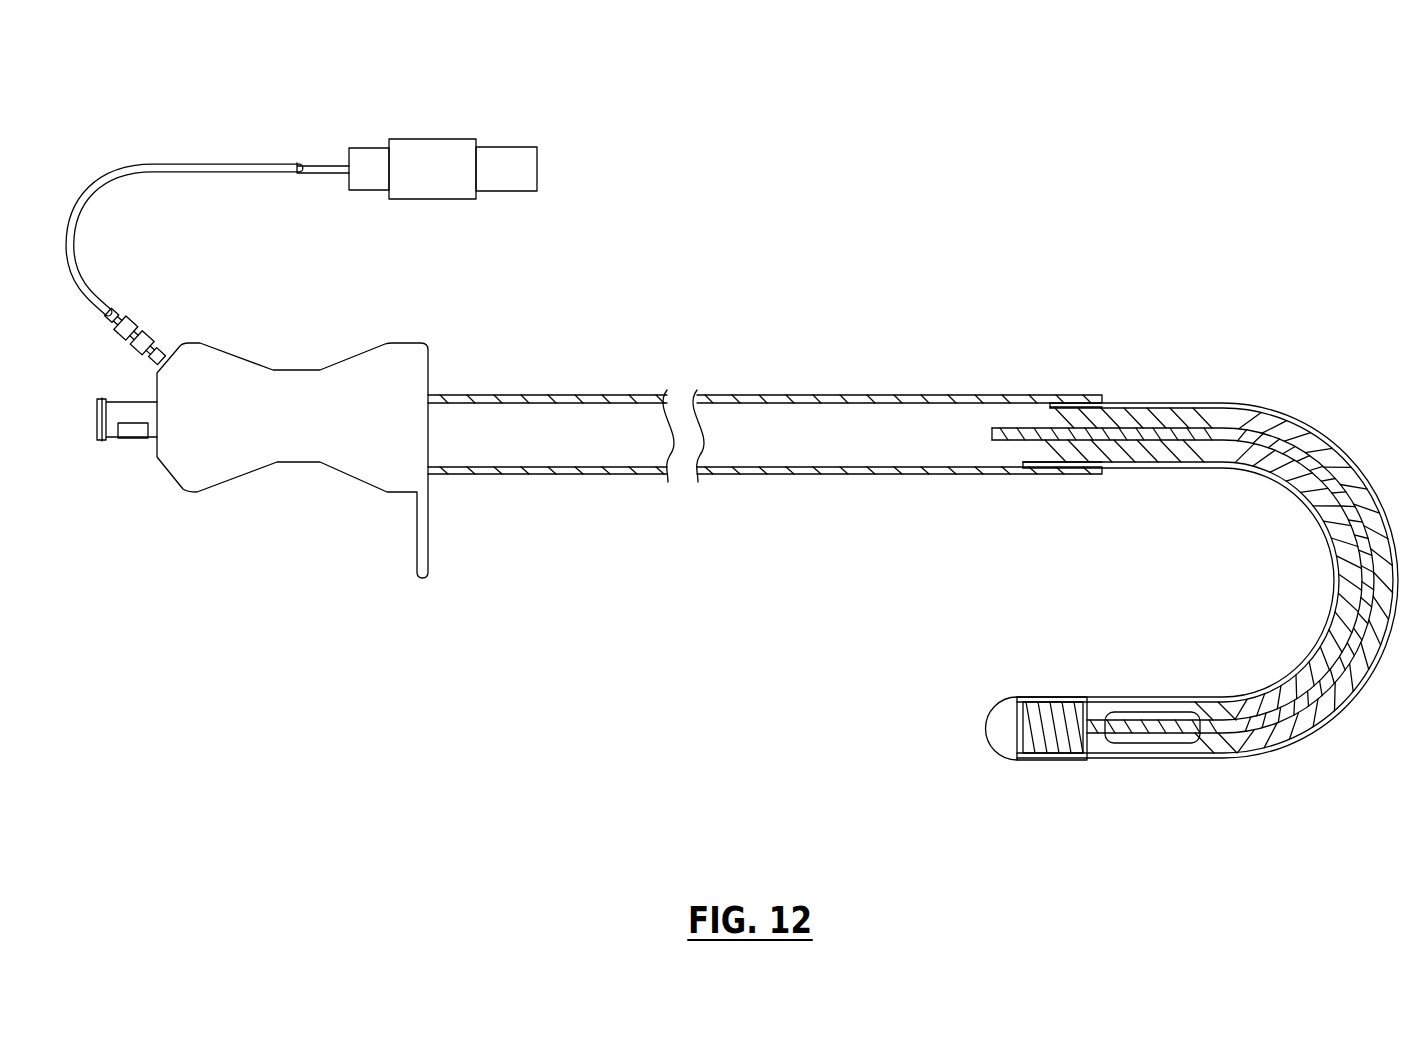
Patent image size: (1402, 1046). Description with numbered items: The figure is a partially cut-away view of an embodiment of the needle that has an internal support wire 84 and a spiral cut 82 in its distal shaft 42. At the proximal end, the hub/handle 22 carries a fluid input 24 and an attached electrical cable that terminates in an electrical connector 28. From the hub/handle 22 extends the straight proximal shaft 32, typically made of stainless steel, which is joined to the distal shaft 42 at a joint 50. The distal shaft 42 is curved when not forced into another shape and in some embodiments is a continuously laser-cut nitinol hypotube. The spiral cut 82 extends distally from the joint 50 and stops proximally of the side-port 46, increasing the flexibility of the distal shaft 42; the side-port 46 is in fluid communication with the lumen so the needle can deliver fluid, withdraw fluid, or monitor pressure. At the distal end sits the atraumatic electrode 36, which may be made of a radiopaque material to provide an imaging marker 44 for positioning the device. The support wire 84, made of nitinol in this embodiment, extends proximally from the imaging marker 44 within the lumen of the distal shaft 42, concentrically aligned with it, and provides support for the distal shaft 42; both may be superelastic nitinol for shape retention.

The hub/handle 22 is at (295, 442).
The fluid input 24 is at (130, 432).
The electrical connector 28 is at (430, 158).
The proximal shaft 32 is at (818, 372).
The atraumatic electrode 36 is at (986, 731).
The distal shaft 42 is at (1185, 380).
The imaging marker 44 is at (1052, 750).
The side-port 46 is at (1146, 762).
The joint 50 is at (1053, 404).
The spiral cut 82 is at (1287, 424).
The support wire 84 is at (1003, 464).